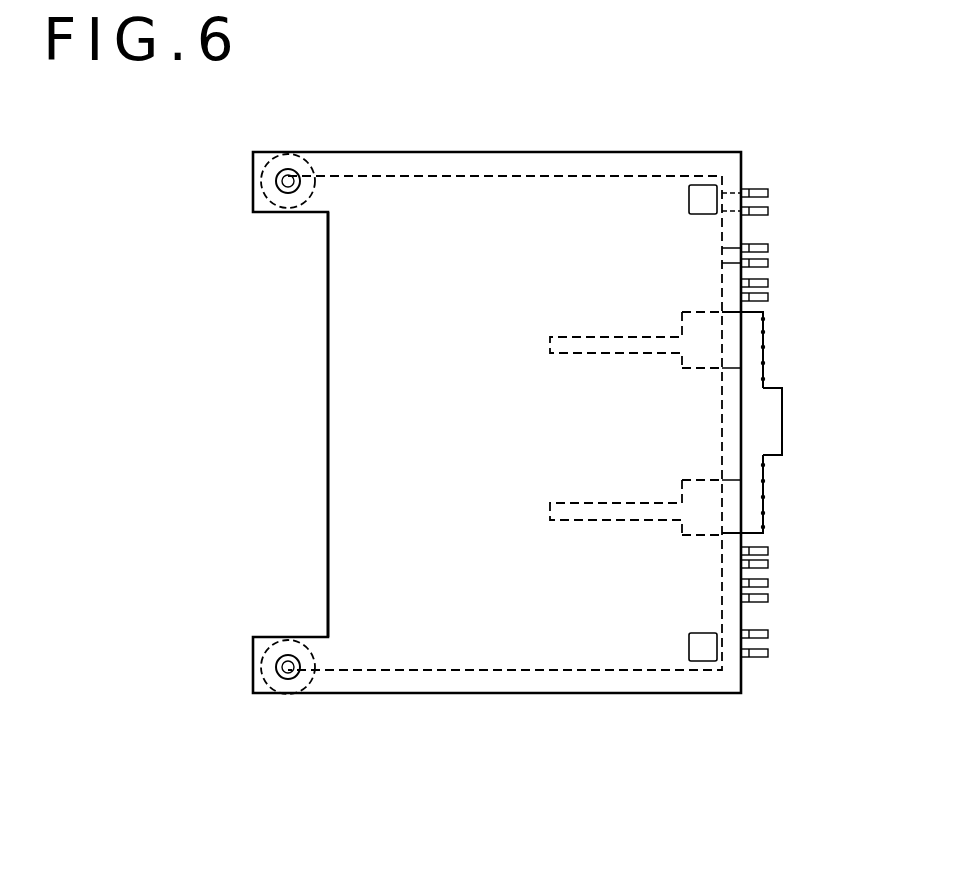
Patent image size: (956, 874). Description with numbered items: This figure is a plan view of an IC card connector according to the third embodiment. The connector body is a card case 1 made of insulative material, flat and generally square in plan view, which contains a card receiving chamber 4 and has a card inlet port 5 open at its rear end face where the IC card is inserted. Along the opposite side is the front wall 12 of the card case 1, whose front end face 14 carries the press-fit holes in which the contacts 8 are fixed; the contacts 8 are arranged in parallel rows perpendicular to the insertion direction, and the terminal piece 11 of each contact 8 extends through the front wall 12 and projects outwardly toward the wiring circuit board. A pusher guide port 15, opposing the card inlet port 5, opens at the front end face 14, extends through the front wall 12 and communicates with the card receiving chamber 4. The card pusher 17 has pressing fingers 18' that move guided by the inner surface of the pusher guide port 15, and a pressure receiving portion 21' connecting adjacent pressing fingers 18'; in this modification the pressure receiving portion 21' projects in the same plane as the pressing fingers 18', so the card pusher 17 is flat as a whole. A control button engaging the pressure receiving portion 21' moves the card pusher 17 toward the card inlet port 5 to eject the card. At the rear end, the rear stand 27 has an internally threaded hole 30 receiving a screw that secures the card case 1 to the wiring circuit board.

The card case 1 is at (536, 152).
The card receiving chamber 4 is at (445, 351).
The card inlet port 5 is at (327, 413).
The contacts 8 is at (758, 656).
The terminal piece 11 is at (756, 186).
The front wall 12 is at (731, 613).
The front end face 14 is at (746, 234).
The pusher guide port 15 is at (728, 312).
The card pusher 17 is at (756, 362).
The pressing fingers 18' is at (636, 434).
The pressure receiving portion 21' is at (812, 421).
The rear stand 27 is at (305, 690).
The internally threaded hole 30 is at (275, 690).